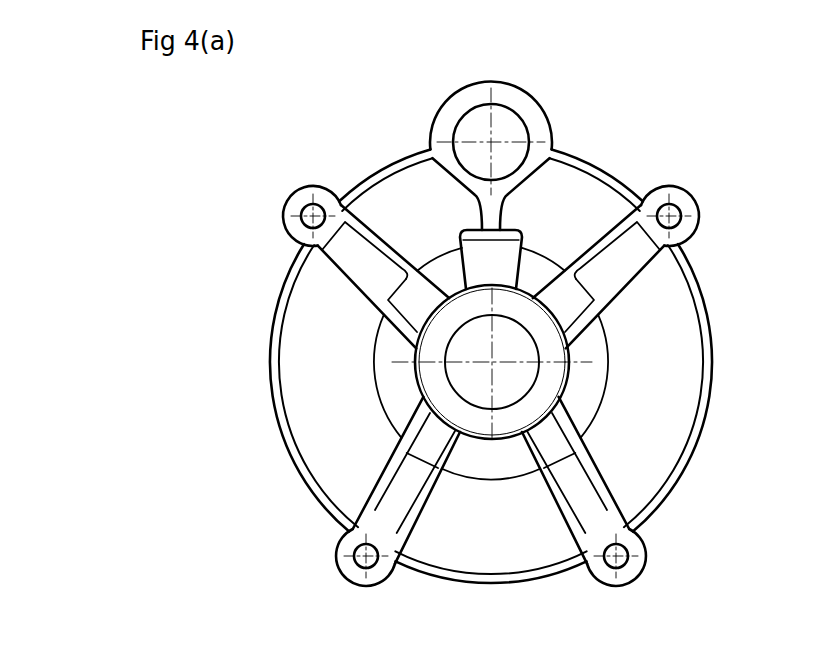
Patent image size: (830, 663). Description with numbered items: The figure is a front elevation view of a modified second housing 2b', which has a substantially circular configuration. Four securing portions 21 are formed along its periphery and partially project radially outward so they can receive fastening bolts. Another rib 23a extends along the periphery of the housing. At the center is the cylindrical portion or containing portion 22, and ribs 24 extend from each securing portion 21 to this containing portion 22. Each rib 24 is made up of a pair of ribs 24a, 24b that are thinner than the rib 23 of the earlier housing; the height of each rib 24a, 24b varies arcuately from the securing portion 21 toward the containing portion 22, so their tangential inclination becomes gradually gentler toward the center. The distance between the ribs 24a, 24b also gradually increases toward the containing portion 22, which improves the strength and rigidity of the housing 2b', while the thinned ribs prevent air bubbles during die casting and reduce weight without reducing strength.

The housing 2b' is at (530, 152).
The securing portions 21 is at (303, 203).
The cylindrical portion or containing portion 22 is at (548, 349).
The ribs 23 is at (602, 364).
The rib 23a is at (712, 396).
The ribs 24 is at (193, 236).
The rib 24a is at (352, 224).
The rib 24b is at (377, 313).